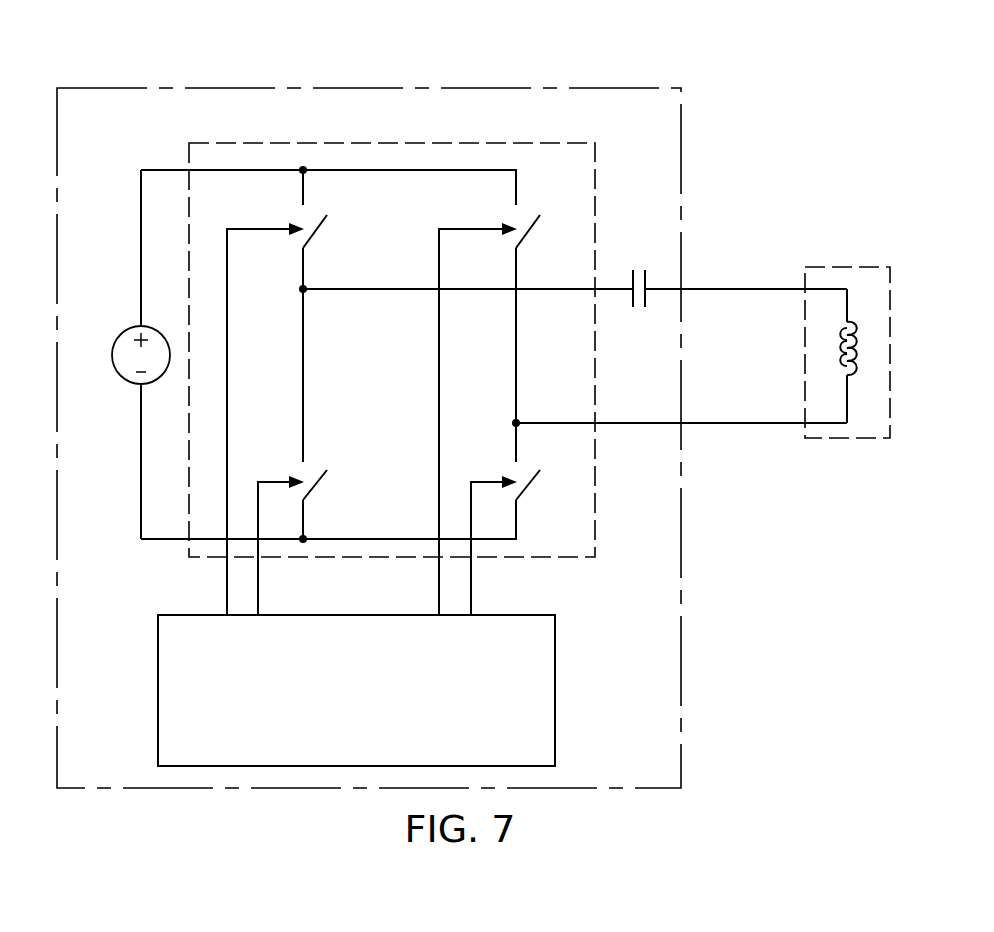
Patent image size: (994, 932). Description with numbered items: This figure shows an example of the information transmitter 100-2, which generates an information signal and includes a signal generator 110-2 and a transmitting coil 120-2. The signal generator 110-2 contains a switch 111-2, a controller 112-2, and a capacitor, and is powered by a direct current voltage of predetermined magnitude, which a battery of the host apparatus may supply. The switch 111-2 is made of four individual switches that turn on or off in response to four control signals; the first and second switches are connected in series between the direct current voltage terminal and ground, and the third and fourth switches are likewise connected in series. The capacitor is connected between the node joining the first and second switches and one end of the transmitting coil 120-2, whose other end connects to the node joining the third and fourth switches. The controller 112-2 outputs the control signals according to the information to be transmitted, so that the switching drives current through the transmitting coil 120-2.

The information transmitter 100-2 is at (507, 29).
The signal generator 110-2 is at (635, 88).
The switch 111-2 is at (551, 143).
The controller 112-2 is at (555, 658).
The transmitting coil 120-2 is at (843, 267).